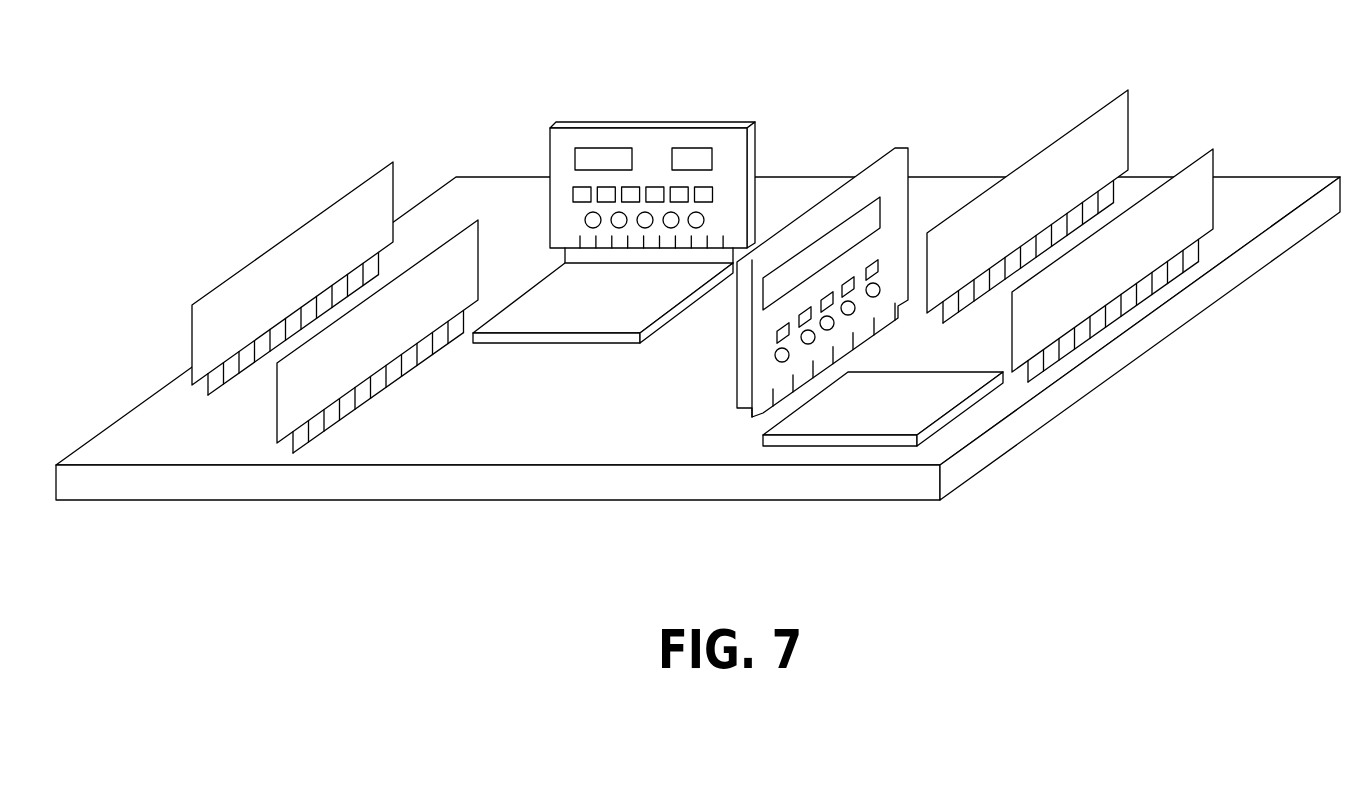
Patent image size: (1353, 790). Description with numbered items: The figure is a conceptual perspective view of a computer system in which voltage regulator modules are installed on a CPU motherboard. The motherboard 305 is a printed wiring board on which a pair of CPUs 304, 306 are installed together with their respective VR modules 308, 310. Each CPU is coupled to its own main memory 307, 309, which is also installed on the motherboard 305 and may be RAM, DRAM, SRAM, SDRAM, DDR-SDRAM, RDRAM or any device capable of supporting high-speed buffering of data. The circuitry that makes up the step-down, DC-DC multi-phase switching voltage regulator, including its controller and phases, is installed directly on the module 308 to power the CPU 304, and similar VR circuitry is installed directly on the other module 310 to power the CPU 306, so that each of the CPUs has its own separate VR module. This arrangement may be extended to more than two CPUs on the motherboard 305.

The CPU 304 is at (604, 337).
The motherboard 305 is at (1093, 370).
The CPU 306 is at (958, 408).
The main memory 307 is at (345, 294).
The VR module 308 is at (752, 145).
The main memory 309 is at (1080, 223).
The VR module 310 is at (910, 165).